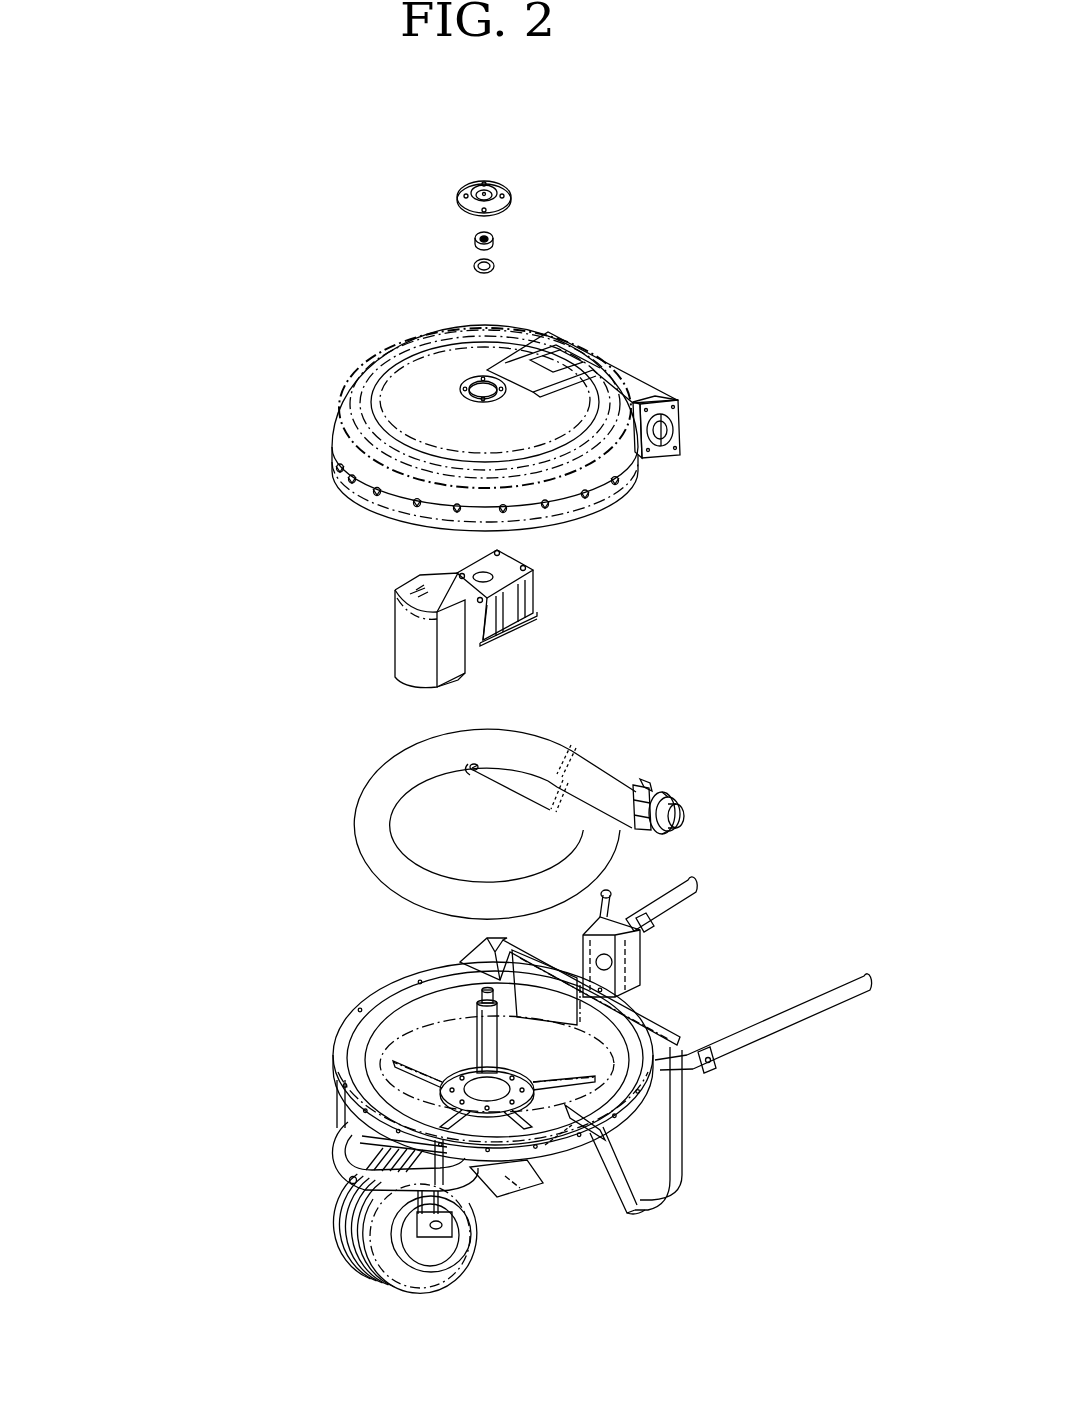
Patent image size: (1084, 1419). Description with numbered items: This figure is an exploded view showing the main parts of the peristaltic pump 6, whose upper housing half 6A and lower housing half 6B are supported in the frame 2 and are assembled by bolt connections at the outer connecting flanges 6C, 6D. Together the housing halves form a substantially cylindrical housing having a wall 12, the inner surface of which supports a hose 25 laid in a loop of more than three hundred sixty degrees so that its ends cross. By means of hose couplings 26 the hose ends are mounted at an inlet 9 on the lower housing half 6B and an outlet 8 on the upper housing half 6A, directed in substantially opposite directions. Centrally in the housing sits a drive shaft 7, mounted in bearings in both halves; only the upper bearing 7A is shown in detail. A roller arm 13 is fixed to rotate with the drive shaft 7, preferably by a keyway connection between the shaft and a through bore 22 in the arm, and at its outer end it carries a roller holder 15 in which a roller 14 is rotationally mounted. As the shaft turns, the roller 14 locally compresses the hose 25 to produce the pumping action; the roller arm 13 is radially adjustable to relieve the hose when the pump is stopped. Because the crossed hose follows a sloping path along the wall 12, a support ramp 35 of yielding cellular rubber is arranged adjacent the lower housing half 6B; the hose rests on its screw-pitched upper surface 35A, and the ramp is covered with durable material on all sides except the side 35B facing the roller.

The frame 2 is at (702, 1097).
The pump 6 is at (722, 356).
The upper housing half 6A is at (400, 387).
The lower housing half 6B is at (490, 1157).
The outer connecting flange 6C is at (332, 437).
The outer connecting flange 6D is at (573, 1120).
The drive shaft 7 is at (477, 1022).
The upper bearing 7A is at (536, 183).
The outlet 8 is at (683, 435).
The inlet 9 is at (443, 944).
The wall 12 is at (620, 1027).
The roller arm 13 is at (555, 604).
The roller 14 is at (407, 667).
The roller holder 15 is at (447, 643).
The through bore 22 is at (440, 574).
The hose 25 is at (600, 780).
The hose couplings 26 is at (683, 812).
The support ramp 35 is at (360, 1065).
The upper surface 35A is at (367, 1039).
The side facing the roller 35B is at (420, 1023).